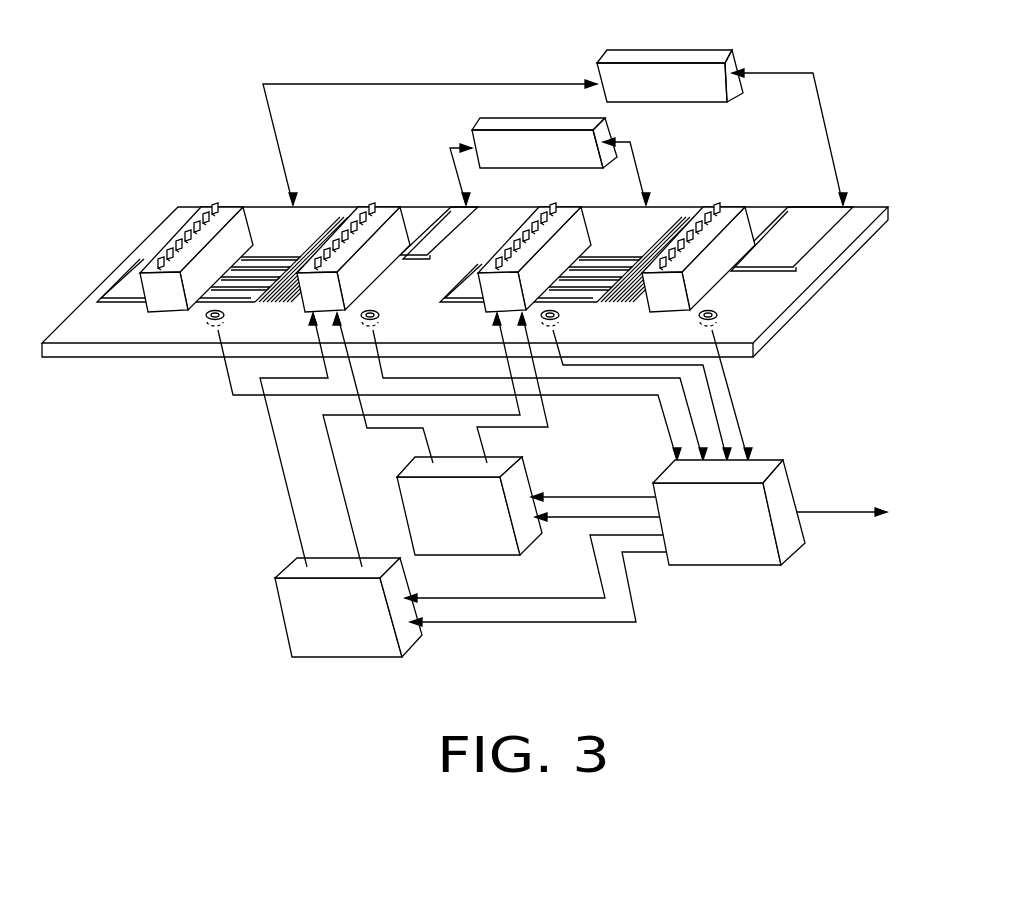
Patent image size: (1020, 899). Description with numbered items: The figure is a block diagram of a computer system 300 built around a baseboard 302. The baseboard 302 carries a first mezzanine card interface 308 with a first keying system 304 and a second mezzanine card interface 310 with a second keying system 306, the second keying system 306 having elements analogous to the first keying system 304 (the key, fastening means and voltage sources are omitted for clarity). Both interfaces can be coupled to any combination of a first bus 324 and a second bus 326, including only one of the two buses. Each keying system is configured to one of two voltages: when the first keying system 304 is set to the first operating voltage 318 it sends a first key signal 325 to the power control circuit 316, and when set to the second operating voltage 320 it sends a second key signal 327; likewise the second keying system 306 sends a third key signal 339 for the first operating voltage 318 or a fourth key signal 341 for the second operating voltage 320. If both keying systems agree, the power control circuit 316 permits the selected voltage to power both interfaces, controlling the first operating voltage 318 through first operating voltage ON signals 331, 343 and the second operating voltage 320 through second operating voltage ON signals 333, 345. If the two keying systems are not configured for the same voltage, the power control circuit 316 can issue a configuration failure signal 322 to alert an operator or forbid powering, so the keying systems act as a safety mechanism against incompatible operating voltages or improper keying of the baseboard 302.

The computer system 300 is at (527, 716).
The baseboard 302 is at (836, 268).
The first keying system 304 is at (716, 303).
The second keying system 306 is at (368, 302).
The first mezzanine card interface 308 is at (547, 206).
The second mezzanine card interface 310 is at (205, 207).
The power control circuit 316 is at (703, 565).
The first operating voltage 318 is at (405, 521).
The second operating voltage 320 is at (282, 620).
The configuration failure signal 322 is at (852, 513).
The first bus 324 is at (663, 50).
The first key signal 325 is at (729, 386).
The second bus 326 is at (557, 168).
The second key signal 327 is at (720, 427).
The first operating voltage ON signal 331 is at (575, 496).
The second operating voltage ON signal 333 is at (566, 598).
The third key signal 339 is at (693, 425).
The fourth key signal 341 is at (677, 453).
The first operating voltage ON signal 343 is at (563, 518).
The second operating voltage ON signal 345 is at (566, 622).